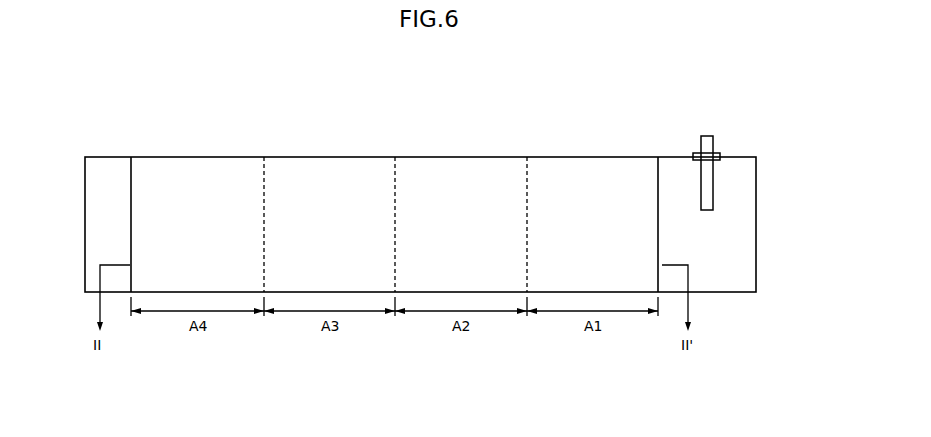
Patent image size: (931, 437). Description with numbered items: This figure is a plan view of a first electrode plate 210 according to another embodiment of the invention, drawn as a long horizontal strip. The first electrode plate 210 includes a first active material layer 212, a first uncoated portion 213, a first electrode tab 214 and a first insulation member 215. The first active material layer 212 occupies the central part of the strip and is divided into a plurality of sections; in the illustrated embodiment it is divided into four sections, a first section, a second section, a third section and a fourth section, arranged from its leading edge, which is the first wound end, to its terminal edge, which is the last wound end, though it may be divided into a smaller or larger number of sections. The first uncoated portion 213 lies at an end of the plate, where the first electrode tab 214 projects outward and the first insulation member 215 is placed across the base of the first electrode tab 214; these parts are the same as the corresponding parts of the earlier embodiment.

The first electrode plate 210 is at (86, 86).
The first active material layer 212 is at (180, 160).
The first uncoated portion 213 is at (756, 232).
The first electrode tab 214 is at (707, 137).
The first insulation member 215 is at (697, 152).